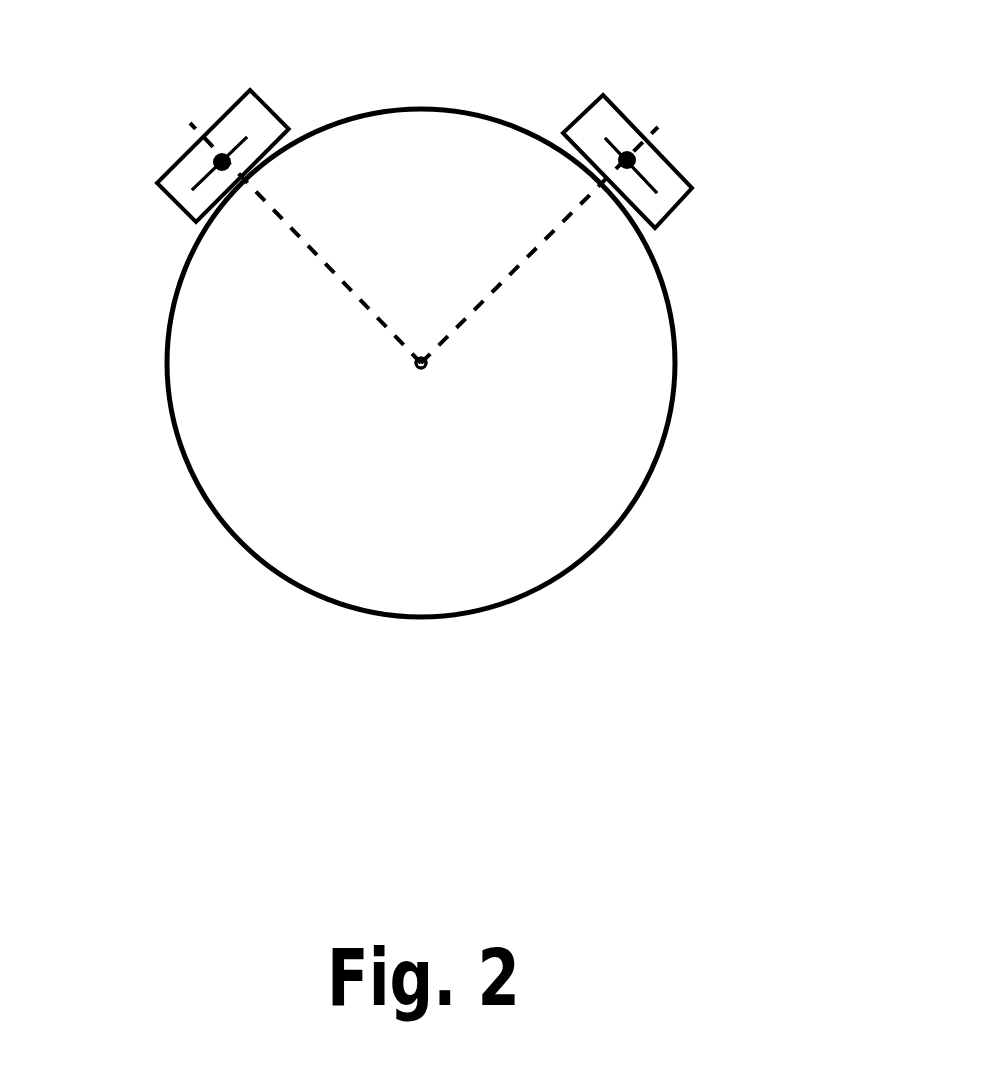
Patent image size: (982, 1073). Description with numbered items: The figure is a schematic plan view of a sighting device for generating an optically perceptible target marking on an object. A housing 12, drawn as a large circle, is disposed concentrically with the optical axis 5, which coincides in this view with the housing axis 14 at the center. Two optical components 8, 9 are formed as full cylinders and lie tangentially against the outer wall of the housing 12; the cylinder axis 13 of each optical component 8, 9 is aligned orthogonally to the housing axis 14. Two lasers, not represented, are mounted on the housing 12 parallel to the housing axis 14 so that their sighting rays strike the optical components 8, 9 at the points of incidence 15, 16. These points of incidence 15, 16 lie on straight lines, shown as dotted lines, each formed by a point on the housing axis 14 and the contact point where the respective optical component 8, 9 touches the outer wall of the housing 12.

The optical axis 5 is at (426, 365).
The optical component 8 is at (285, 128).
The optical component 9 is at (565, 130).
The housing 12 is at (234, 541).
The cylinder axis 13 is at (240, 138).
The housing axis 14 is at (421, 363).
The point of incidence 15 is at (636, 159).
The point of incidence 16 is at (213, 163).